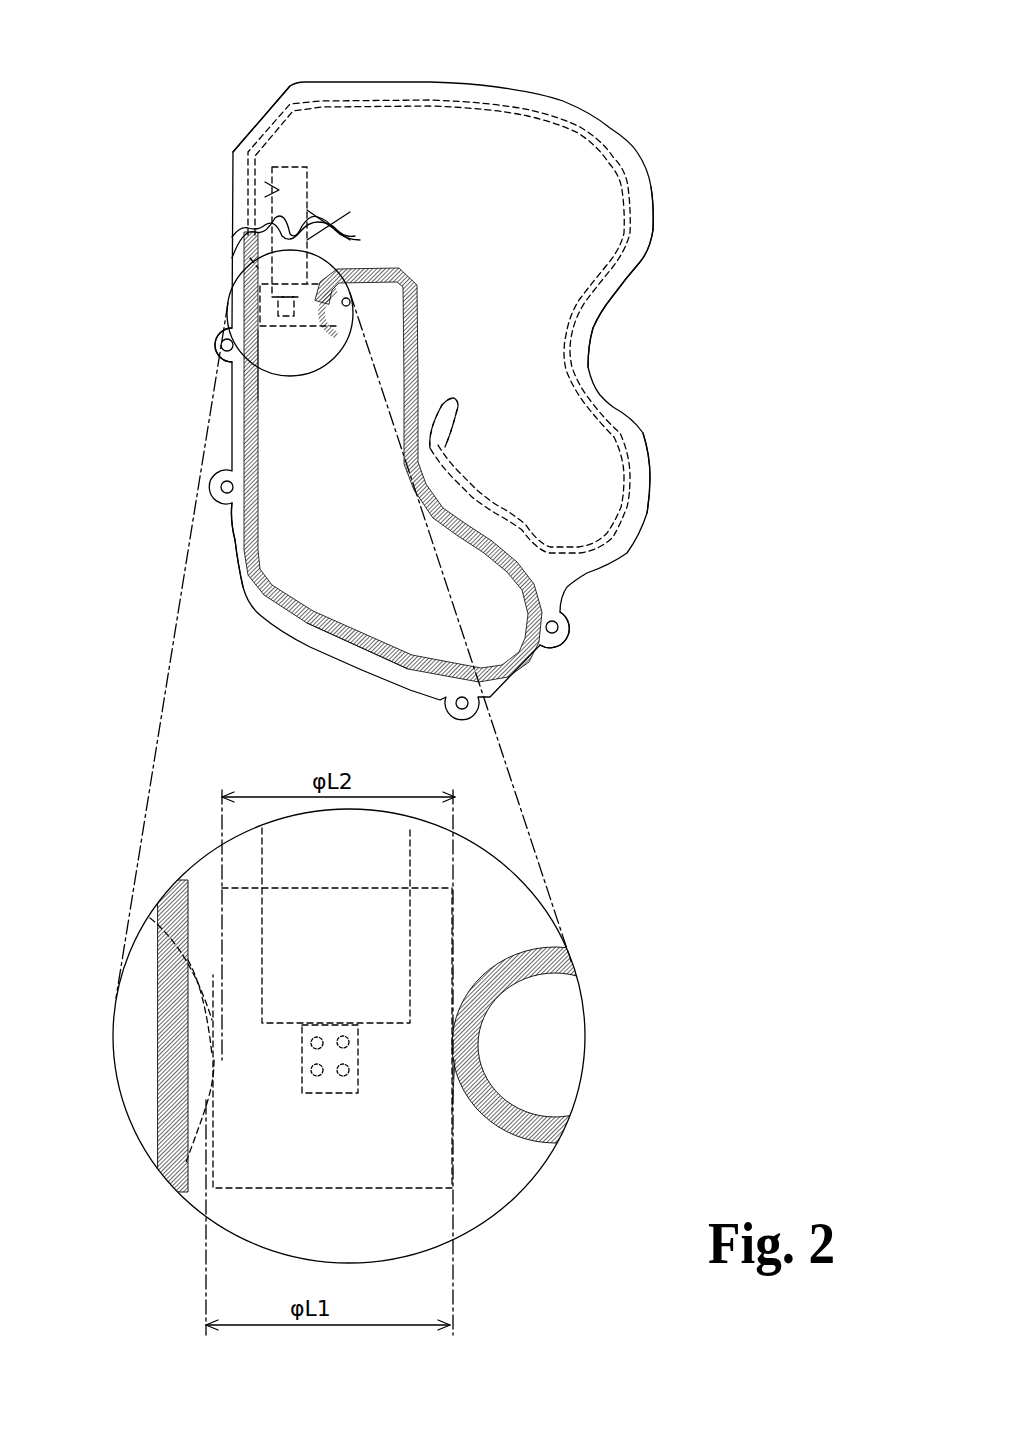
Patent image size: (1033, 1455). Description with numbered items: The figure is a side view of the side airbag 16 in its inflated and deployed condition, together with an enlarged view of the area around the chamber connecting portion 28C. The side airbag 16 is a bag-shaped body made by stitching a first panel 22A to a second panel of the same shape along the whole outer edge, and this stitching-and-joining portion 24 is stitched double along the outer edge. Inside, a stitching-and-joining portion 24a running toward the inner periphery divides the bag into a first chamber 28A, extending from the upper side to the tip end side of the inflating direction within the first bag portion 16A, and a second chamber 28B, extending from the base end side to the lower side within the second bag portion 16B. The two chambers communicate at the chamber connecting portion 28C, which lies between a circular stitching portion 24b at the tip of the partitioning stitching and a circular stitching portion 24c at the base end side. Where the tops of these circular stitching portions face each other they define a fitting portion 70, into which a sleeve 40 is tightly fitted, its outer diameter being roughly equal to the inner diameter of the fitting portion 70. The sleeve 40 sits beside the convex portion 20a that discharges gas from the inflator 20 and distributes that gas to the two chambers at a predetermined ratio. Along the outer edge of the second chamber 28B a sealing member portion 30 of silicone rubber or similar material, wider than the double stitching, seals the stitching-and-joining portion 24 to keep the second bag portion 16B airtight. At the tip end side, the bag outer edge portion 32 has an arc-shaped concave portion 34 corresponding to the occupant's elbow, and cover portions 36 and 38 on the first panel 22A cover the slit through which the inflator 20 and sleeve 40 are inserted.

The side airbag 16 is at (752, 112).
The first bag portion 16A is at (585, 198).
The second bag portion 16B is at (505, 640).
The inflator 20 is at (262, 188).
The convex portion 20a is at (262, 307).
The first panel 22A is at (325, 140).
The stitching-and-joining portion 24 is at (548, 107).
The stitching-and-joining portion 24a is at (450, 400).
The circular stitching portion 24b is at (342, 335).
The circular stitching portion 24c is at (250, 260).
The first chamber 28A is at (452, 130).
The second chamber 28B is at (346, 597).
The chamber connecting portion 28C is at (287, 357).
The sealing member portion 30 is at (245, 587).
The bag outer edge portion 32 is at (653, 243).
The concave portion 34 is at (590, 343).
The cover portion 36 is at (330, 238).
The cover portion 38 is at (330, 214).
The sleeve 40 is at (212, 338).
The fitting portion 70 is at (463, 1118).